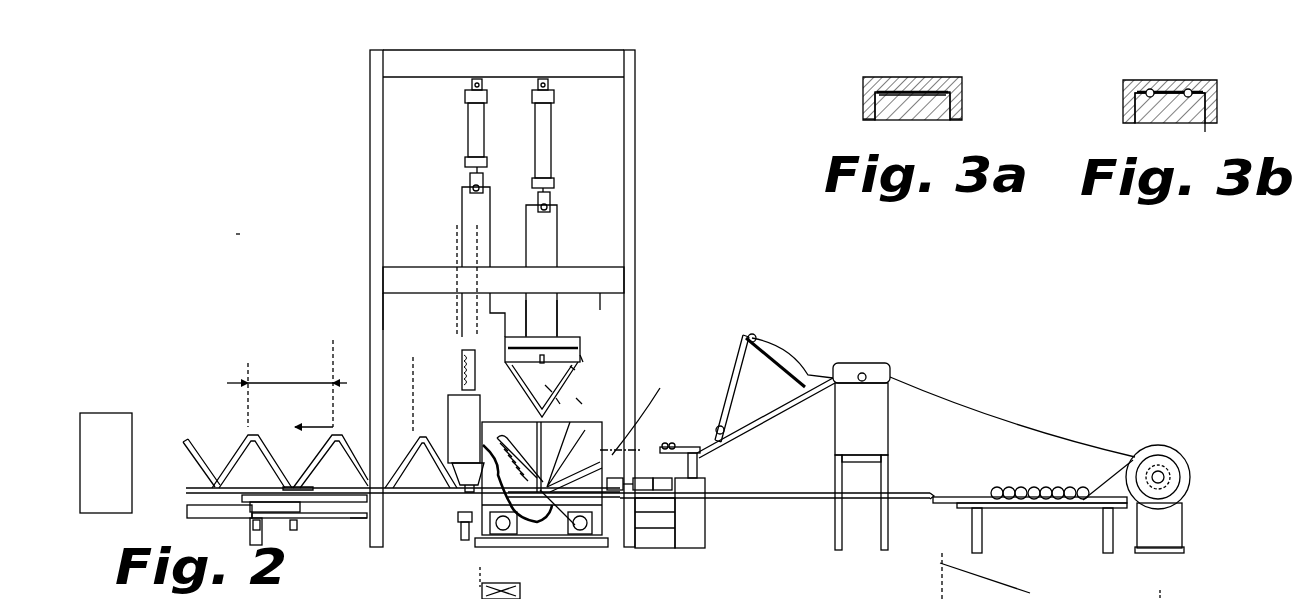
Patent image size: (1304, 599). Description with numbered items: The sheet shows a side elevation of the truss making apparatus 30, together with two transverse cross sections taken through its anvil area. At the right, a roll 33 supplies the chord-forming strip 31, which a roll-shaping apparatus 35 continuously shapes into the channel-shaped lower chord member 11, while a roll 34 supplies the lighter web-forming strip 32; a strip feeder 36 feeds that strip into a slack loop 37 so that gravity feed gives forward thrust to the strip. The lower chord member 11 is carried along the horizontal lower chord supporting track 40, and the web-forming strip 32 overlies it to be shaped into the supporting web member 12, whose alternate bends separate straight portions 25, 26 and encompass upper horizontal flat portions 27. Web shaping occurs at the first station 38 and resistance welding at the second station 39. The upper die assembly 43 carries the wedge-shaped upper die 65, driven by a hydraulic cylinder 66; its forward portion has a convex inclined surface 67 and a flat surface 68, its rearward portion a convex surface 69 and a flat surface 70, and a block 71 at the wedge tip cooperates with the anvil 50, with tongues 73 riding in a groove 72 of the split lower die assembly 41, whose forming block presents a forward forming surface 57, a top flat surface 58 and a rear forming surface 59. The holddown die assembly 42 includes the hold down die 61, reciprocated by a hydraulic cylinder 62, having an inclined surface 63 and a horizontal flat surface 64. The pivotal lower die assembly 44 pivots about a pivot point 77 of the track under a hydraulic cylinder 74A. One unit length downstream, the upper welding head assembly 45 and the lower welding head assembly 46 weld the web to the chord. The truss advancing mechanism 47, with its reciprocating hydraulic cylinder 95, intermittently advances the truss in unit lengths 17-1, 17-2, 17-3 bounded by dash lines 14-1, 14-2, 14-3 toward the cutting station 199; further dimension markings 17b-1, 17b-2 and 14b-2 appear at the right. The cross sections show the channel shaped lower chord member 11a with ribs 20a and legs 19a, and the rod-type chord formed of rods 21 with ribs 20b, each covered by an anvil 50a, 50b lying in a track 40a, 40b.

In FIG. 2, the truss making apparatus 30 is at (238, 234).
In FIG. 2, the cutting station 199 is at (118, 412).
In FIG. 2, the dash line 14-1 is at (248, 365).
In FIG. 2, the dash line 14-2 is at (333, 350).
In FIG. 2, the dash line 14-3 is at (413, 358).
In FIG. 2, the unit length of truss element 17-1 is at (223, 386).
In FIG. 2, the unit length of truss element 17-2 is at (285, 384).
In FIG. 2, the unit length of truss element 17-3 is at (345, 384).
In FIG. 2, the supporting web member 12 is at (228, 455).
In FIG. 2, the straight portion 25 is at (192, 460).
In FIG. 2, the straight portion 26 is at (252, 461).
In FIG. 2, the lower chord member 11 is at (188, 490).
In FIG. 2, the reciprocating hydraulic cylinder 95 is at (215, 515).
In FIG. 2, the truss advancing mechanism 47 is at (332, 523).
In FIG. 2, the first station 38 is at (614, 322).
In FIG. 2, the second station 39 is at (442, 310).
In FIG. 2, the upper die assembly 43 is at (566, 305).
In FIG. 2, the hydraulic cylinder 62 is at (466, 146).
In FIG. 2, the hydraulic cylinder 66 is at (553, 153).
In FIG. 2, the flat surface 68 is at (538, 317).
In FIG. 2, the convex inclined surface 67 is at (505, 375).
In FIG. 2, the tongues 73 is at (546, 354).
In FIG. 2, the flat surface 70 is at (583, 360).
In FIG. 2, the loop 37 is at (730, 337).
In FIG. 2, the strip feeder 36 is at (865, 362).
In FIG. 2, the upper die 65 is at (572, 370).
In FIG. 2, the convex surface 69 is at (560, 400).
In FIG. 2, the hold down die 61 is at (512, 369).
In FIG. 2, the horizontal flat surface 64 is at (552, 388).
In FIG. 2, the block 71 is at (580, 400).
In FIG. 2, the split lower die assembly 41 is at (646, 413).
In FIG. 2, the holddown die assembly 42 is at (485, 383).
In FIG. 2, the upper welding head assembly 45 is at (450, 425).
In FIG. 2, the inclined surface 63 is at (482, 408).
In FIG. 2, the top flat surface 58 is at (505, 437).
In FIG. 2, the rear forming surface 59 is at (528, 446).
In FIG. 2, the groove 72 is at (570, 437).
In FIG. 2, the pivotal lower die assembly 44 is at (640, 455).
In FIG. 2, the hydraulic cylinder 74A is at (643, 480).
In FIG. 2, the forward forming surface 57 is at (493, 443).
In FIG. 2, the lower welding head assembly 46 is at (457, 527).
In FIG. 2, the anvil 50 is at (535, 490).
In FIG. 2, the pivot point 77 is at (555, 493).
In FIG. 2, the horizontal flat portion 27 is at (520, 586).
In FIG. 2, the lower chord supporting track 40 is at (735, 499).
In FIG. 2, the web-forming strip 32 is at (1013, 423).
In FIG. 2, the roll 33 is at (1155, 448).
In FIG. 2, the roll 34 is at (1167, 460).
In FIG. 2, the chord-forming strip 31 is at (1107, 480).
In FIG. 2, the roll-shaping apparatus 35 is at (1035, 513).
In FIG. 2, the spacing 17b-1 is at (940, 563).
In FIG. 2, the spacing 17b-2 is at (1006, 581).
In FIG. 2, the station 14b-2 is at (1188, 591).
In FIG. 3a, the raised longitudinally extending ribs 20a is at (892, 77).
In FIG. 3a, the channel shaped lower chord member 11a is at (912, 87).
In FIG. 3a, the channel 50a is at (962, 90).
In FIG. 3a, the channel leg 19a is at (872, 122).
In FIG. 3a, the core 40a is at (908, 118).
In FIG. 3b, the ribs 20b is at (1188, 88).
In FIG. 3b, the longitudinally extending rods 21 is at (1197, 88).
In FIG. 3b, the channel 50b is at (1217, 88).
In FIG. 3b, the core 40b is at (1150, 117).